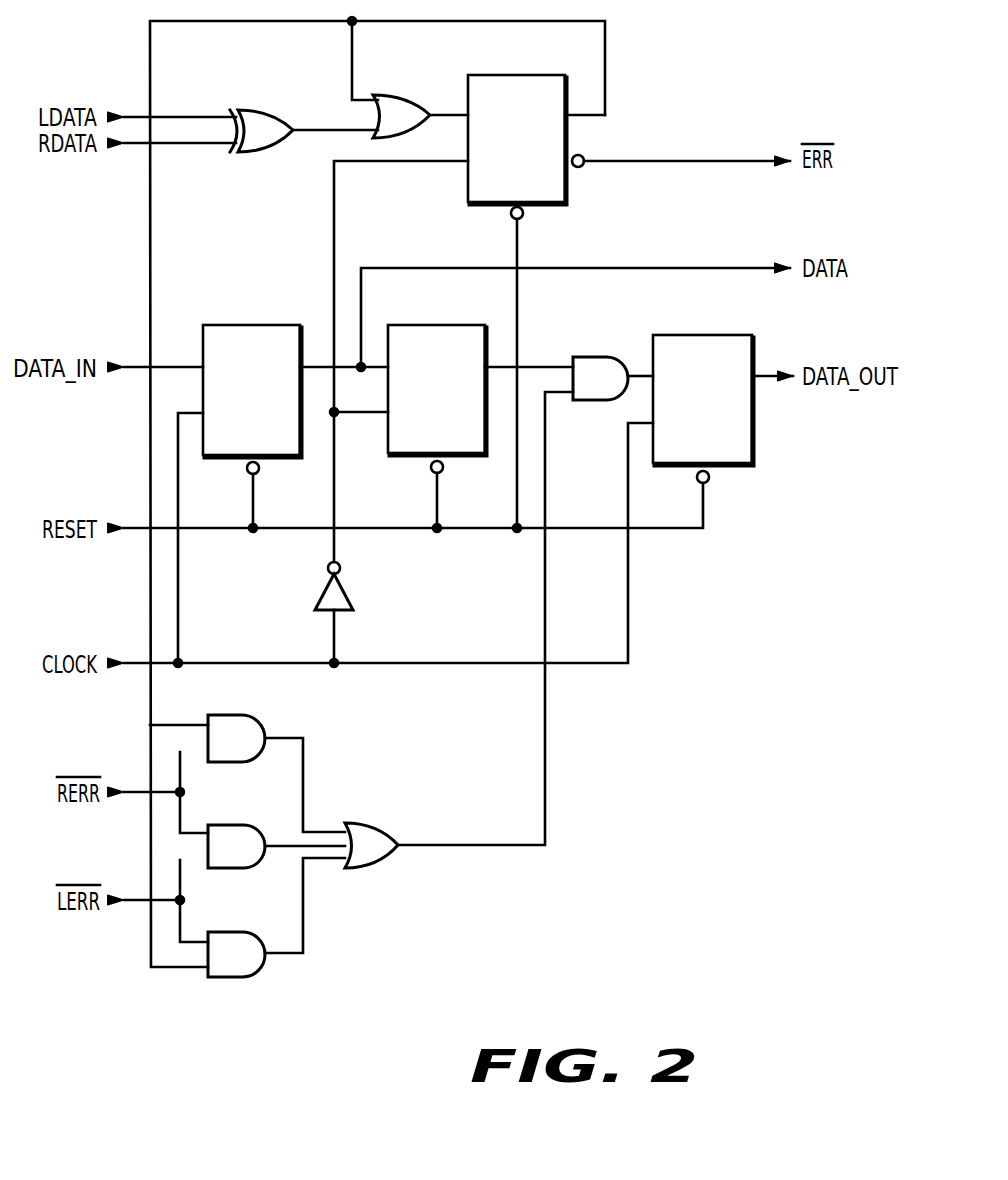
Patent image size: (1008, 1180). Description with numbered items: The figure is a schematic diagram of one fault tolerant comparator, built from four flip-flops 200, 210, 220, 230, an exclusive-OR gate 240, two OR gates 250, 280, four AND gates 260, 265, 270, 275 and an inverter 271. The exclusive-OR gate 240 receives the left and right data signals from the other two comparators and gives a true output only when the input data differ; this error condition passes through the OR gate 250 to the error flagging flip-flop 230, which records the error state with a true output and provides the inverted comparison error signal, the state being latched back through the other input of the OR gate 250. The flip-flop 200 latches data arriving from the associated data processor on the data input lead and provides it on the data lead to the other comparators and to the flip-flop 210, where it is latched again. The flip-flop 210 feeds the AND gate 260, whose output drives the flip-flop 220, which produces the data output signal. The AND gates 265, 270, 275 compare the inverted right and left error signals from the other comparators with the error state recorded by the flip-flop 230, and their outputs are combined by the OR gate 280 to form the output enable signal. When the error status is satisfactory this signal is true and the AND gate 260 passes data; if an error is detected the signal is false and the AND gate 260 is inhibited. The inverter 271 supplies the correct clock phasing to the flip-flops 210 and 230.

The flip-flop 200 is at (237, 323).
The flip-flop 210 is at (445, 323).
The flip-flop 220 is at (756, 436).
The flip-flop 230 is at (569, 190).
The exclusive-OR gate 240 is at (263, 154).
The OR gate 250 is at (397, 95).
The AND gate 260 is at (595, 356).
The AND gate 265 is at (240, 763).
The AND gate 270 is at (240, 869).
The inverter 271 is at (355, 594).
The AND gate 275 is at (240, 978).
The OR gate 280 is at (371, 823).